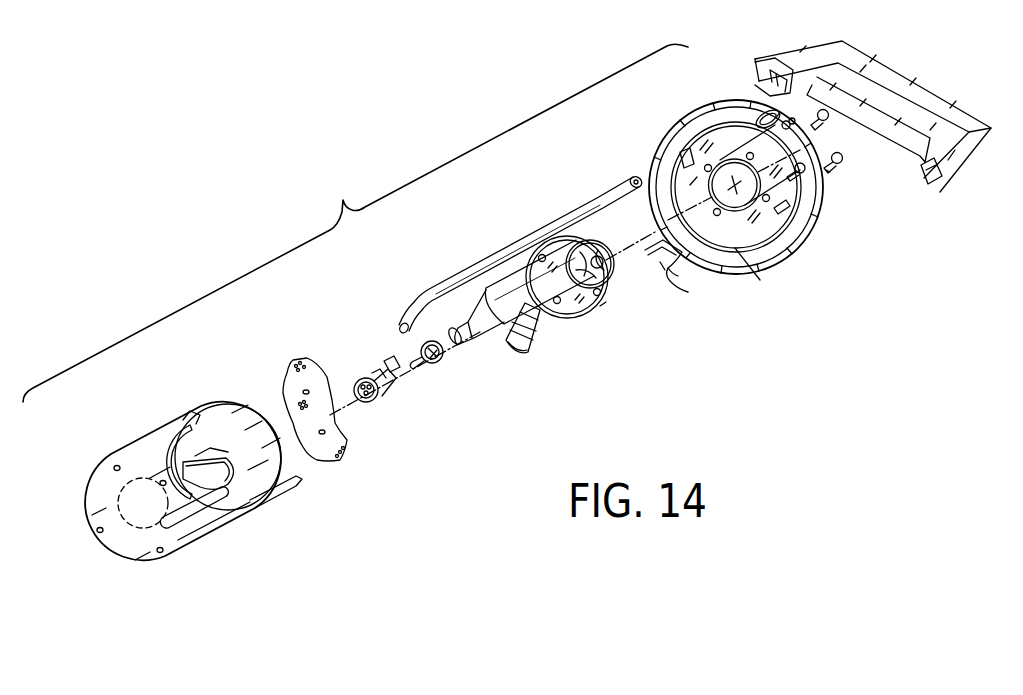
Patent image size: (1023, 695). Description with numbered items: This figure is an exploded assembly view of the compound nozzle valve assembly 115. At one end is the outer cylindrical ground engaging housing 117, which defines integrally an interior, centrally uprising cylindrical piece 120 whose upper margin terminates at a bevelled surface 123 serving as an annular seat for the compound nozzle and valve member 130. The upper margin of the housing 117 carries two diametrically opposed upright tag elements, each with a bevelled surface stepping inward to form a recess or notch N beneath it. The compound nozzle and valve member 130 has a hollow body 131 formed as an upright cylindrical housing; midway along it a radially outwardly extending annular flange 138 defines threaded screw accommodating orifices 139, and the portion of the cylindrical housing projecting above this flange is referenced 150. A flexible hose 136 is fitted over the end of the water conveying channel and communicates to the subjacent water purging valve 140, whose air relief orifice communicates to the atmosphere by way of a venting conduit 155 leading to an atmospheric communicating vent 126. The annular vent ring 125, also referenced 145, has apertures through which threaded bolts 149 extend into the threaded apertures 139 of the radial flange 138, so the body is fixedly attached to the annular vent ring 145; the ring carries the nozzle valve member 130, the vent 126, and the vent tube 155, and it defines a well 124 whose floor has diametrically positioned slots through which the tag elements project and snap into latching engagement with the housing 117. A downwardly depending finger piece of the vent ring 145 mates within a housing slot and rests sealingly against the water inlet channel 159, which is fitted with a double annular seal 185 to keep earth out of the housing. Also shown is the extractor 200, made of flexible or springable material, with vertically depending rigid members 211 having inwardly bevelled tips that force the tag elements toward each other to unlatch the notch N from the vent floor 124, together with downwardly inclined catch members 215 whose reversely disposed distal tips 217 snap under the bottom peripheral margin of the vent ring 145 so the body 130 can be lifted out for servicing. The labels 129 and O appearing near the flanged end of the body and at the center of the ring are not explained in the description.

The compound nozzle valve assembly 115 is at (355, 223).
The ground engaging housing 117 is at (107, 473).
The central uprising cylindrical piece 120 is at (207, 480).
The bevelled surface 123 is at (227, 477).
The well 124 is at (738, 189).
The annular vent ring 125 is at (330, 437).
The atmospheric communicating vent 126 is at (753, 103).
The flange 129 is at (602, 269).
The compound nozzle and valve member 130 is at (543, 372).
The hollow body 131 is at (510, 283).
The flexible hose 136 is at (445, 365).
The annular flange 138 is at (606, 309).
The threaded screw accommodating orifices 139 is at (597, 292).
The water purging valve 140 is at (367, 363).
The annular vent ring 145 is at (700, 133).
The threaded bolts 149 is at (847, 163).
The projecting extent of cylindrical housing 150 is at (596, 315).
The venting conduit 155 is at (430, 292).
The water inlet channel 159 is at (537, 307).
The double annular seal 185 is at (528, 347).
The extractor 200 is at (887, 141).
The vertically depending rigid members 211 is at (912, 135).
The downwardly inclined catch members 215 is at (961, 173).
The distal tips 217 is at (927, 188).
The notch N is at (289, 492).
The axis O is at (747, 170).